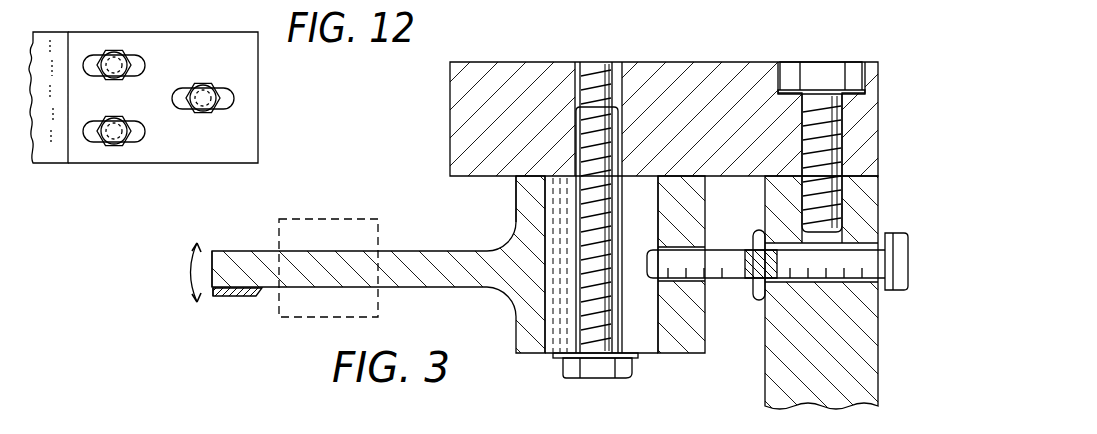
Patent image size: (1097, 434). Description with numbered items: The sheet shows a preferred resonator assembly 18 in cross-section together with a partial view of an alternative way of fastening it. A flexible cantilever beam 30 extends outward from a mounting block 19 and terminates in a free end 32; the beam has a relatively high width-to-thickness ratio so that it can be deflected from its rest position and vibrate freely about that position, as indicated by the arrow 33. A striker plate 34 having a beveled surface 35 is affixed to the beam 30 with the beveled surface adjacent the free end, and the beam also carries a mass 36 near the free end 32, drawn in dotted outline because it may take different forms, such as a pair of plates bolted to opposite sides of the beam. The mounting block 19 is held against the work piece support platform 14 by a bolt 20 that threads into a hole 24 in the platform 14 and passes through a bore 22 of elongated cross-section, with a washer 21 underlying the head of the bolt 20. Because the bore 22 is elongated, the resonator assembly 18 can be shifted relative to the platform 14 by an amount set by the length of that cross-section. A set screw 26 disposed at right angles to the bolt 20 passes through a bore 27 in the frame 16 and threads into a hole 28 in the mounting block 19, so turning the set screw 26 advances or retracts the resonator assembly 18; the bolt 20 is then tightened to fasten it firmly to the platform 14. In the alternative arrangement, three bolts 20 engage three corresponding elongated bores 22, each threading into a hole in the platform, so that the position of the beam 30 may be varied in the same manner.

In FIG. 3, the work piece support platform 14 is at (712, 62).
In FIG. 3, the frame 16 is at (881, 390).
In FIG. 3, the resonator assembly 18 is at (716, 389).
In FIG. 12, the mounting block 19 is at (258, 148).
In FIG. 3, the mounting block 19 is at (517, 333).
In FIG. 12, the bolt 20 is at (98, 54).
In FIG. 3, the bolt 20 is at (597, 381).
In FIG. 3, the washer 21 is at (560, 356).
In FIG. 12, the bore 22 is at (92, 58).
In FIG. 3, the bore 22 is at (648, 333).
In FIG. 3, the hole 24 is at (617, 90).
In FIG. 3, the set screw 26 is at (855, 260).
In FIG. 3, the bore 27 is at (793, 284).
In FIG. 3, the hole 28 is at (690, 256).
In FIG. 12, the flexible cantilever beam 30 is at (50, 152).
In FIG. 3, the flexible cantilever beam 30 is at (470, 276).
In FIG. 3, the free end 32 is at (213, 252).
In FIG. 3, the arrow 33 is at (184, 269).
In FIG. 3, the striker plate 34 is at (246, 298).
In FIG. 3, the beveled surface 35 is at (215, 297).
In FIG. 3, the mass 36 is at (378, 312).